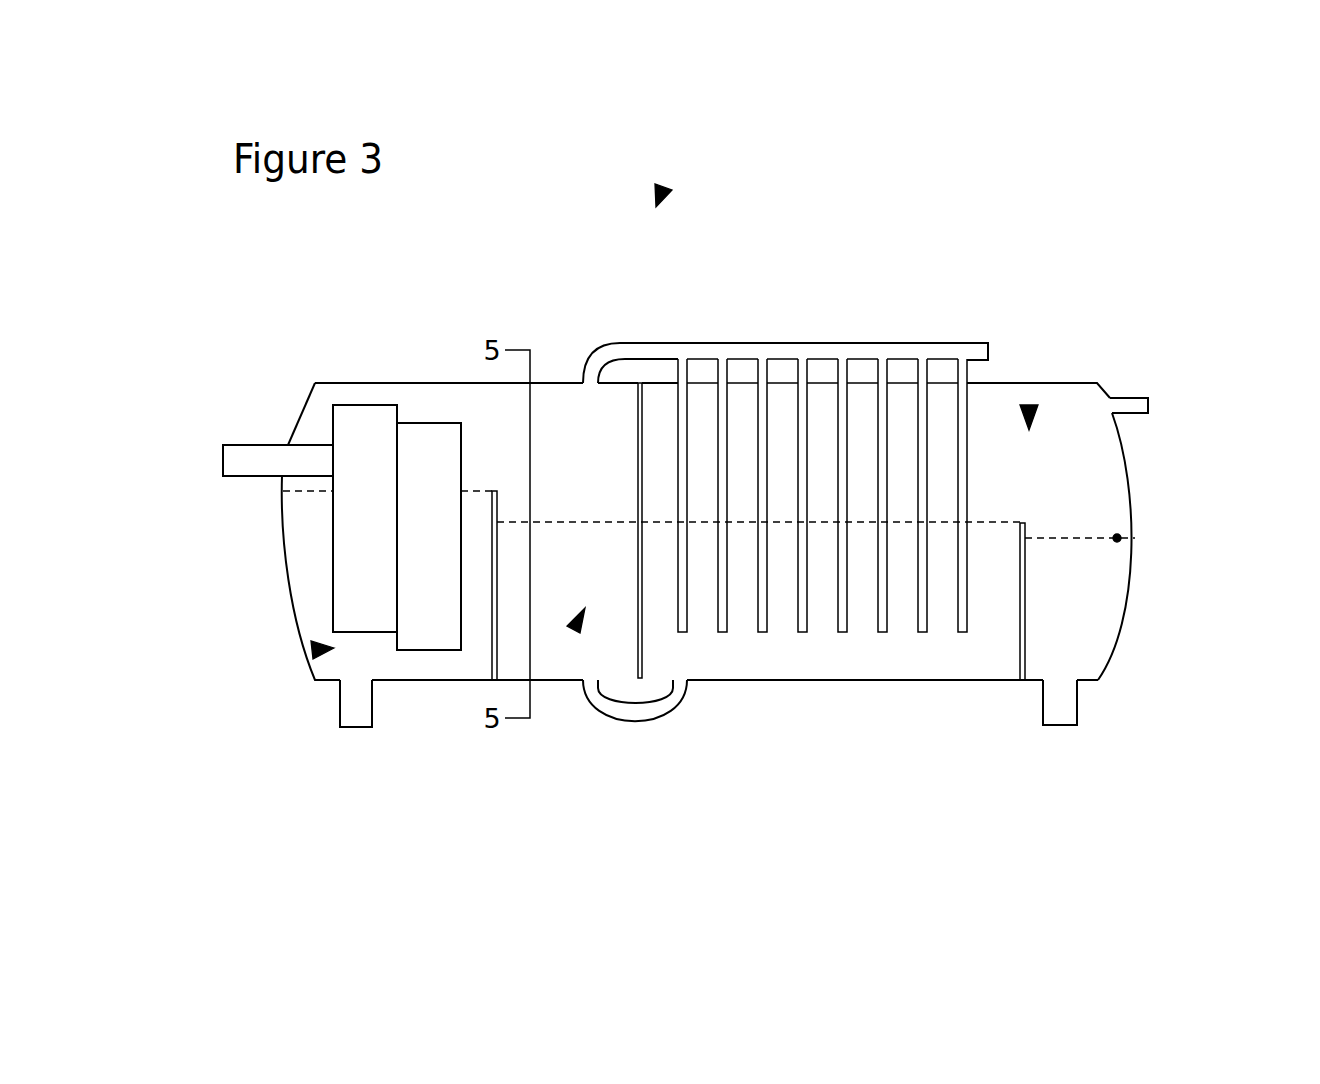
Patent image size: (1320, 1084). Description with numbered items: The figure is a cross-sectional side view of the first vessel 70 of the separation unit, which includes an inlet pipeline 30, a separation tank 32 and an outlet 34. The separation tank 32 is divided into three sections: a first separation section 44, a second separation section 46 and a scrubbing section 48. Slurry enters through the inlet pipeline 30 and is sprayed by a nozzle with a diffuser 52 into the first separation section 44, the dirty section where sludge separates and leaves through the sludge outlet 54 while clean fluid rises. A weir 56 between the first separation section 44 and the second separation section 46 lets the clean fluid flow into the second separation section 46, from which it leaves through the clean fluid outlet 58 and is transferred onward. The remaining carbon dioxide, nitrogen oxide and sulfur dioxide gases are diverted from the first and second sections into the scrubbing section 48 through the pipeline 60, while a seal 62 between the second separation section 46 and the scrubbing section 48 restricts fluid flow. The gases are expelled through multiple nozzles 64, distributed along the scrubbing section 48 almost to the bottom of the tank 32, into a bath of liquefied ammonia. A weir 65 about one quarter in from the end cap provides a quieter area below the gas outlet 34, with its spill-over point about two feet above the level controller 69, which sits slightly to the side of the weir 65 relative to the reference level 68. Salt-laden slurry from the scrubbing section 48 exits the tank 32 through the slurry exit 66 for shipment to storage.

The inlet pipeline 30 is at (262, 445).
The separation tank 32 is at (402, 382).
The outlet 34 is at (1127, 393).
The first separation section 44 is at (333, 648).
The second separation section 46 is at (583, 612).
The scrubbing section 48 is at (1029, 410).
The diffuser 52 is at (333, 505).
The sludge outlet 54 is at (342, 700).
The weir 56 is at (490, 648).
The clean fluid outlet 58 is at (647, 722).
The pipeline 60 is at (672, 343).
The seal 62 is at (643, 632).
The nozzles 64 is at (837, 617).
The weir 65 is at (1025, 632).
The slurry exit 66 is at (1078, 710).
The reference level 68 is at (1003, 522).
The level controller 69 is at (1117, 540).
The first vessel 70 is at (662, 195).